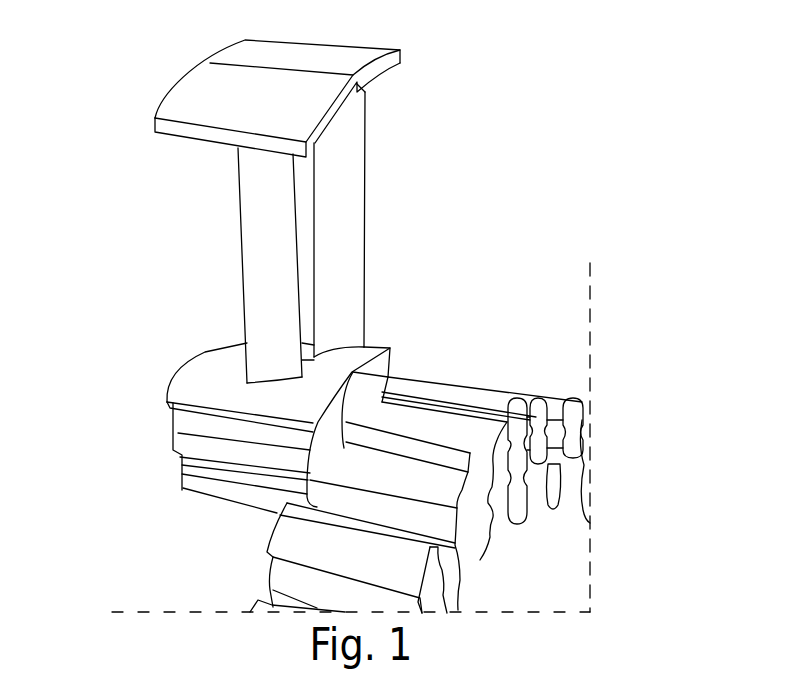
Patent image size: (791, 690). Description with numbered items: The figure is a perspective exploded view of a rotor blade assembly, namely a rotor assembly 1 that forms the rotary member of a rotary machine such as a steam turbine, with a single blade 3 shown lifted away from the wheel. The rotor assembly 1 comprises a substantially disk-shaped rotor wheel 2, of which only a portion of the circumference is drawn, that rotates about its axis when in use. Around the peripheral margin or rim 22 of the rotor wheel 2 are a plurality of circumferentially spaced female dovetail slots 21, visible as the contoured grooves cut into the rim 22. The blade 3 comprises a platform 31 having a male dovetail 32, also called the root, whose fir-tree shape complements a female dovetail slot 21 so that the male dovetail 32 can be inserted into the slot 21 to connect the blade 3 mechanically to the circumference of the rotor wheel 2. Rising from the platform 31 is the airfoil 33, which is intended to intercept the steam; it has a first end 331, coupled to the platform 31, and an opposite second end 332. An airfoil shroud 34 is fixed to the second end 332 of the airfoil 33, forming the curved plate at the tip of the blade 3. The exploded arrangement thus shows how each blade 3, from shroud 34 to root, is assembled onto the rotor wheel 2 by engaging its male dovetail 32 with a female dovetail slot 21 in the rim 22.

The rotor assembly 1 is at (575, 216).
The rotor wheel 2 is at (553, 580).
The female dovetail slots 21 is at (520, 465).
The rim 22 is at (480, 560).
The blade 3 is at (136, 215).
The platform 31 is at (198, 395).
The male dovetail 32 is at (192, 485).
The airfoil 33 is at (367, 197).
The first end 331 is at (367, 338).
The second end 332 is at (365, 98).
The airfoil shroud 34 is at (317, 43).